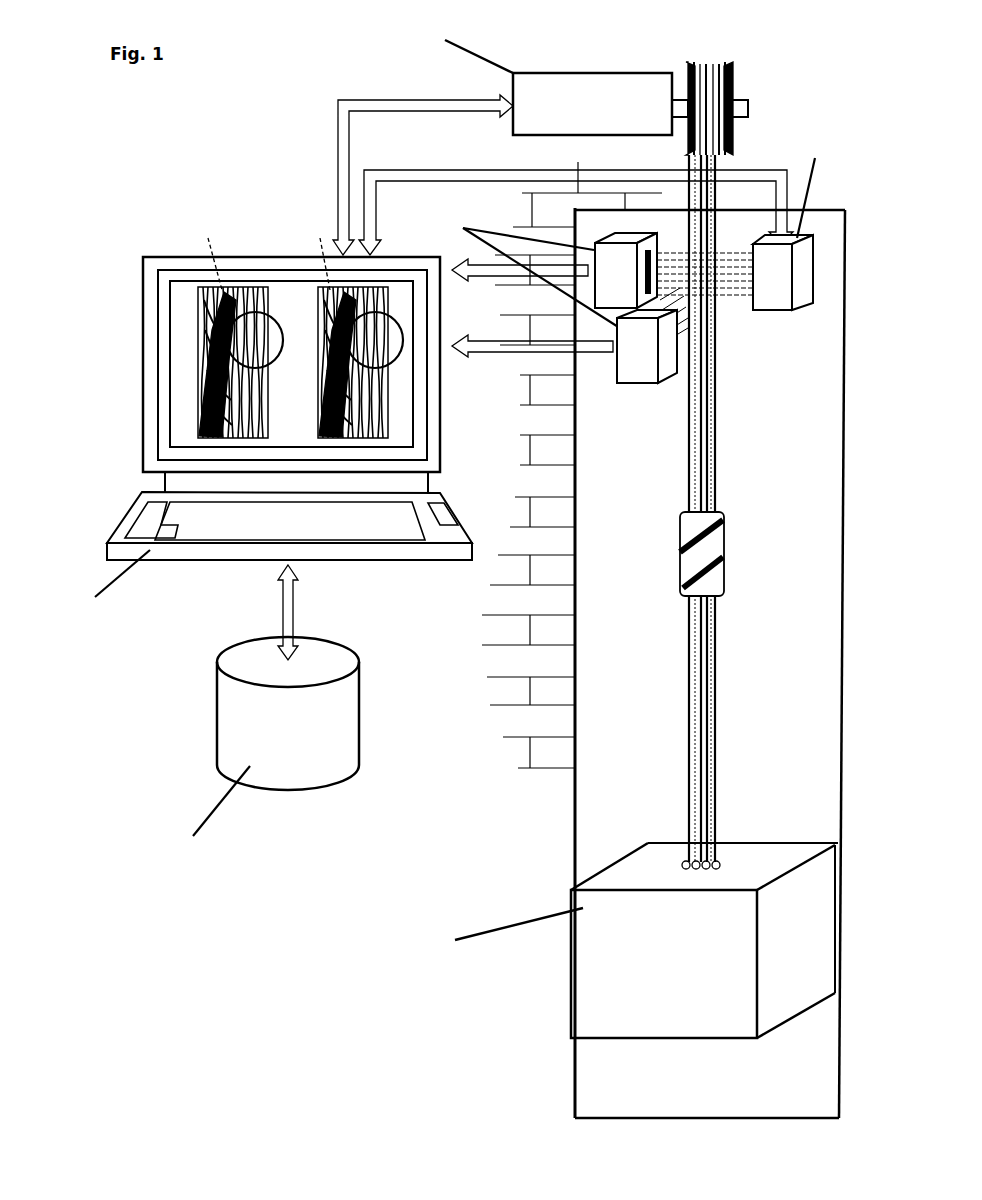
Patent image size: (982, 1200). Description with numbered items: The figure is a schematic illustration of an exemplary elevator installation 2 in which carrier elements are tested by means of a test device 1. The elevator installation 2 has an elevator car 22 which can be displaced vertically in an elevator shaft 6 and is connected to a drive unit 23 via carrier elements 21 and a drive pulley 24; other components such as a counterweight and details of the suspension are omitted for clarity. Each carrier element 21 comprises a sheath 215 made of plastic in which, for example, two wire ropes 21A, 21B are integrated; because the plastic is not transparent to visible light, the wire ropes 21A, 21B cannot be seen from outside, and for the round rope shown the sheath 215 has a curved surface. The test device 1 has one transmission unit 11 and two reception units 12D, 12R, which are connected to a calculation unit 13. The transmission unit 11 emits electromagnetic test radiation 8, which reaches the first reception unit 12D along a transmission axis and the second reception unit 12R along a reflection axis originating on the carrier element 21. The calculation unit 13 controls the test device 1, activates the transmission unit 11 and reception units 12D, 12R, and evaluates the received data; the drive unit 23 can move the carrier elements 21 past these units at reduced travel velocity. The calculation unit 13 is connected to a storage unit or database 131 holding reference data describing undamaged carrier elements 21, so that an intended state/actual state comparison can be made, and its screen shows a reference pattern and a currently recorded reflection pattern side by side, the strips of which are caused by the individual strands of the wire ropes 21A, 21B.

The test device 1 is at (293, 167).
The calculation unit 13 is at (170, 255).
The storage unit or database 131 is at (213, 750).
The drive unit 23 is at (516, 76).
The drive pulley 24 is at (732, 95).
The transmission unit 11 is at (834, 205).
The first reception unit 12D is at (626, 270).
The second reception unit 12R is at (647, 346).
The electromagnetic test radiation 8 is at (737, 300).
The sheath 215 is at (688, 557).
The wire rope 21A is at (683, 633).
The wire rope 21B is at (718, 633).
The carrier element 21 is at (665, 745).
The elevator shaft 6 is at (600, 822).
The elevator car 22 is at (595, 950).
The elevator installation 2 is at (527, 1075).